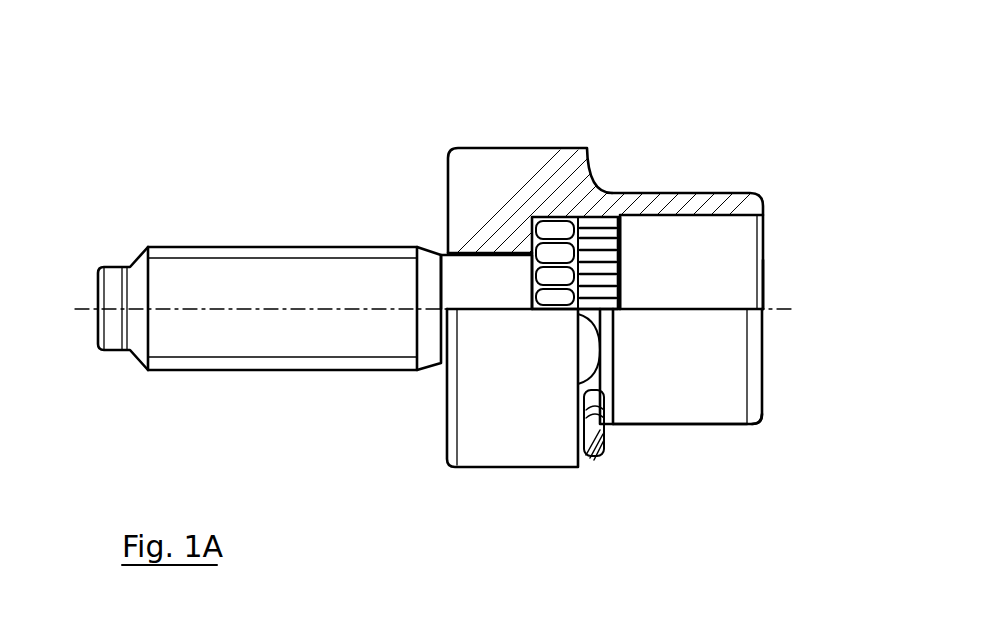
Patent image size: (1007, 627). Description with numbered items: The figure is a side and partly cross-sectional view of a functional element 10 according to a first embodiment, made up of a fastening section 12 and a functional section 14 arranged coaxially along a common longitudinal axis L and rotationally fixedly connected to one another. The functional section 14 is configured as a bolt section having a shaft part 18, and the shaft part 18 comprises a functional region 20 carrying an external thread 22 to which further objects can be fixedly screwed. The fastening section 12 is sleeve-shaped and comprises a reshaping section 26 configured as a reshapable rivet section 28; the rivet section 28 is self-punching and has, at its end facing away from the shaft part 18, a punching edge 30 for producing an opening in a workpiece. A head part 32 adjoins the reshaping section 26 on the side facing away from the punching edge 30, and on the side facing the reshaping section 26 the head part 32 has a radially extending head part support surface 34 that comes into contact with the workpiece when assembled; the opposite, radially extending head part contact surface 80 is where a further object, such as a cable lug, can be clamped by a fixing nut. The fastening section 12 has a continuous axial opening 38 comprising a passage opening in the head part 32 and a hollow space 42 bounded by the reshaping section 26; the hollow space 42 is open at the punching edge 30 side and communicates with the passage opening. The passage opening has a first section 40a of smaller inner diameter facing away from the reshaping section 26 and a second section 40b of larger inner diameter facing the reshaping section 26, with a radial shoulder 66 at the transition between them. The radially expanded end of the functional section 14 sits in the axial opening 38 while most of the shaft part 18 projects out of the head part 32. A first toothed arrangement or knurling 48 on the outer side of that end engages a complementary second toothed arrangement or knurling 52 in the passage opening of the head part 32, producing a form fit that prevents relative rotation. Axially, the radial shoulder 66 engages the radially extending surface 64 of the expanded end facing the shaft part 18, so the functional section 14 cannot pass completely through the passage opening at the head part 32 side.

The functional element 10 is at (735, 90).
The fastening section 12 is at (604, 508).
The functional section 14 is at (269, 336).
The shaft part 18 is at (193, 246).
The functional region 20 is at (238, 240).
The external thread 22 is at (298, 246).
The reshaping section 26 is at (704, 445).
The rivet section 28 is at (658, 425).
The punching edge 30 is at (762, 422).
The head part 32 is at (486, 147).
The head part support surface 34 is at (585, 460).
The axial opening 38 is at (771, 294).
The first section of the passage opening 40a is at (478, 291).
The second section of the passage opening 40b is at (603, 277).
The hollow space 42 is at (738, 250).
The first toothed arrangement or knurling 48 is at (566, 247).
The second toothed arrangement or knurling 52 is at (600, 262).
The radially extending surface 64 is at (520, 226).
The radial shoulder 66 is at (553, 230).
The head part contact surface 80 is at (444, 431).
The longitudinal axis L is at (83, 310).